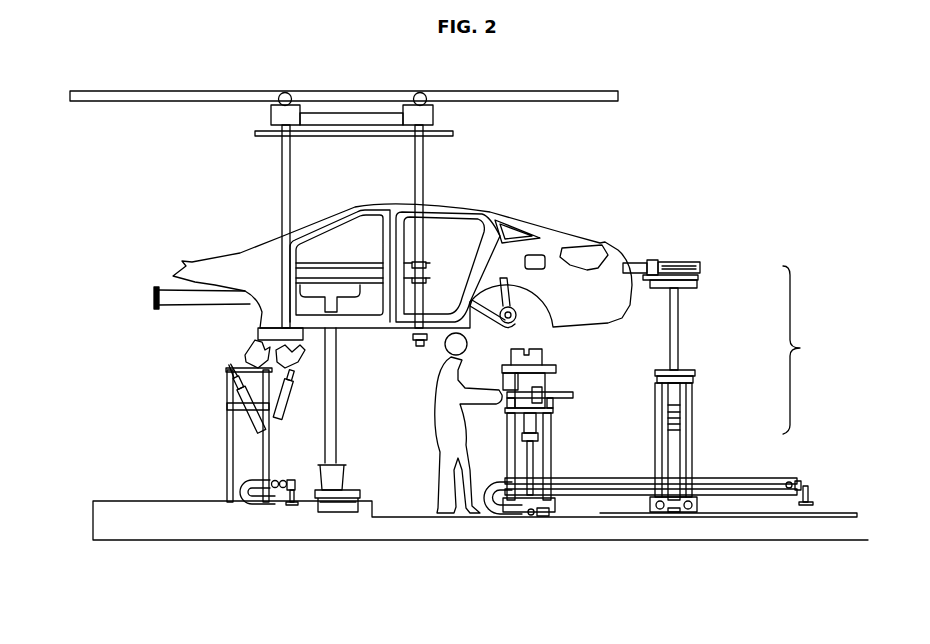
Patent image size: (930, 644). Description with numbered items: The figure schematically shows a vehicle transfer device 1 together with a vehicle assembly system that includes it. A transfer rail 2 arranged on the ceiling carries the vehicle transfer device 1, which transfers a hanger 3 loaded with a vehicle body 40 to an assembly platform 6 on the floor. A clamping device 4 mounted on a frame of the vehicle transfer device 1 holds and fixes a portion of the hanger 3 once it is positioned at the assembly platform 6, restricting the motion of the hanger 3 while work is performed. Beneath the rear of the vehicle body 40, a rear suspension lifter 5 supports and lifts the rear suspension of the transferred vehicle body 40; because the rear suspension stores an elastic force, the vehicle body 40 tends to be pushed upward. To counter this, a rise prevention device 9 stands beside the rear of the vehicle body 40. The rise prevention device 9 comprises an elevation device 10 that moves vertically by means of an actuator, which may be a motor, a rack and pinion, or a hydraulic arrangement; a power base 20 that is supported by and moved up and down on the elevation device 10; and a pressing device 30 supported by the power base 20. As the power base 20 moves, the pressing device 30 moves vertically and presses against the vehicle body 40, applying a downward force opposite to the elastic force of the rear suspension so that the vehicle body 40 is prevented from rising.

The vehicle transfer device 1 is at (488, 185).
The transfer rail 2 is at (527, 98).
The hanger 3 is at (424, 167).
The clamping device 4 is at (215, 363).
The rear suspension lifter 5 is at (565, 368).
The assembly platform 6 is at (176, 528).
The rise prevention device 9 is at (801, 350).
The elevation device 10 is at (690, 430).
The power base 20 is at (697, 283).
The pressing device 30 is at (700, 268).
The vehicle body 40 is at (199, 252).